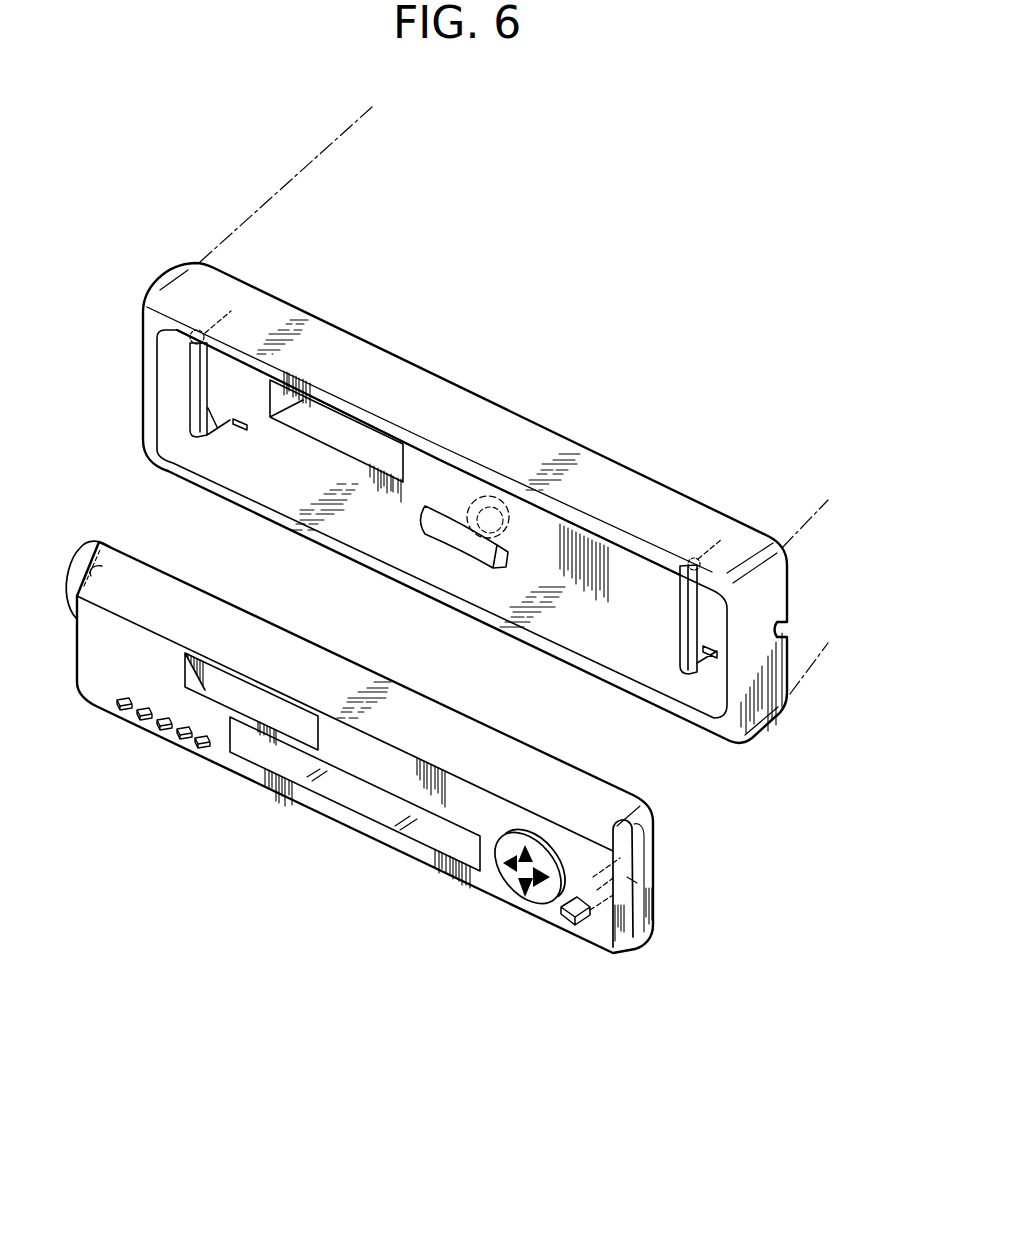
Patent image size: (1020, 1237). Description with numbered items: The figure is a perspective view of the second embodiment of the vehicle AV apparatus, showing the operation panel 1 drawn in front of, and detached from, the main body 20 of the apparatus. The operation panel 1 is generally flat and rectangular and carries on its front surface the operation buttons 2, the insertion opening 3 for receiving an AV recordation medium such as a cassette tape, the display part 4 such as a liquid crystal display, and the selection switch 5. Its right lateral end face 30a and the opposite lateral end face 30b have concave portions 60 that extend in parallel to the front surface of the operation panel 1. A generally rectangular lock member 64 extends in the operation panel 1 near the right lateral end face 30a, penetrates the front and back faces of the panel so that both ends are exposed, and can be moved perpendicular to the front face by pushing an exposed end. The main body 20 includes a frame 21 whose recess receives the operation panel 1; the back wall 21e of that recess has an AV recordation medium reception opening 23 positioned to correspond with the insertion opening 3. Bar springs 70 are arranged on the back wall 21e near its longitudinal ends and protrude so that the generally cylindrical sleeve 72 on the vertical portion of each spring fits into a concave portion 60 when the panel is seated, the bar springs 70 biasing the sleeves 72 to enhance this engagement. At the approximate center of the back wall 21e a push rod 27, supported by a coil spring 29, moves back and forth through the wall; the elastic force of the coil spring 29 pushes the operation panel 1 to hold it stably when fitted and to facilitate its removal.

The operation panel 1 is at (213, 645).
The operation buttons 2 is at (194, 758).
The insertion opening 3 is at (267, 693).
The display part 4 is at (353, 796).
The selection switch 5 is at (507, 880).
The main body 20 is at (422, 227).
The frame 21 is at (385, 384).
The back wall of the frame recess 21e is at (561, 567).
The AV recordation medium reception opening 23 is at (329, 423).
The push rod 27 is at (470, 556).
The coil spring 29 is at (473, 490).
The right lateral end face 30a is at (657, 890).
The lateral end face 30b is at (148, 524).
The concave portions 60 is at (638, 937).
The lock member 64 is at (567, 918).
The bar springs 70 is at (704, 678).
The sleeve 72 is at (687, 621).